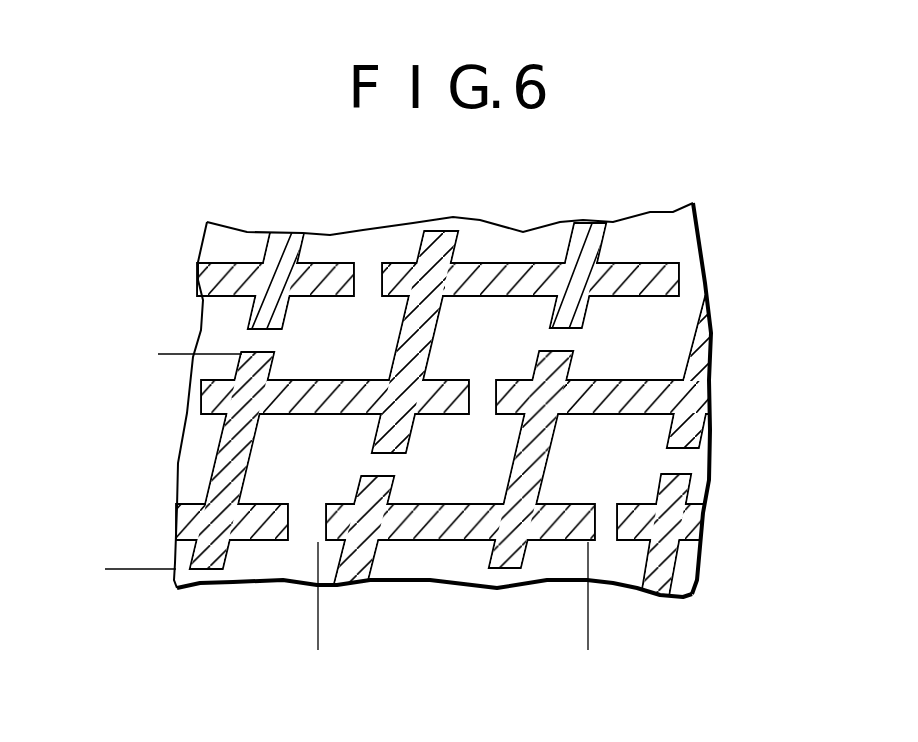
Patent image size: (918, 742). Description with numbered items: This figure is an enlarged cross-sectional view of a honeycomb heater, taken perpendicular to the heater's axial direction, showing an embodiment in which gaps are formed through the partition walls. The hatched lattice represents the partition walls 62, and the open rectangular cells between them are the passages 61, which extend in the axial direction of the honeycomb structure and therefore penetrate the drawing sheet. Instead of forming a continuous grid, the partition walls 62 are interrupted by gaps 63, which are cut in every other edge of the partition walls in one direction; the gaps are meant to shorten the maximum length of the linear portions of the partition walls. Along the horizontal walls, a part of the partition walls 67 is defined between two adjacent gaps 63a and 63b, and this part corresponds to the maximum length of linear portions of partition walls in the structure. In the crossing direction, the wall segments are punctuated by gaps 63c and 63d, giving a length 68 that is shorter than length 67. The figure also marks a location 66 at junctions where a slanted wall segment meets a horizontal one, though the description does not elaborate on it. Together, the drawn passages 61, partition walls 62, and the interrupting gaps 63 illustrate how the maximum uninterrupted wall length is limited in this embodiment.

The passage 61 is at (637, 440).
The partition wall 62 is at (585, 235).
The gap 63 is at (368, 280).
The gap 63a is at (305, 528).
The gap 63b is at (605, 530).
The gap 63c is at (257, 340).
The gap 63d is at (203, 577).
The junction corner 66 is at (373, 420).
The length of a part of partition walls 67 is at (588, 640).
The length 68 is at (168, 355).